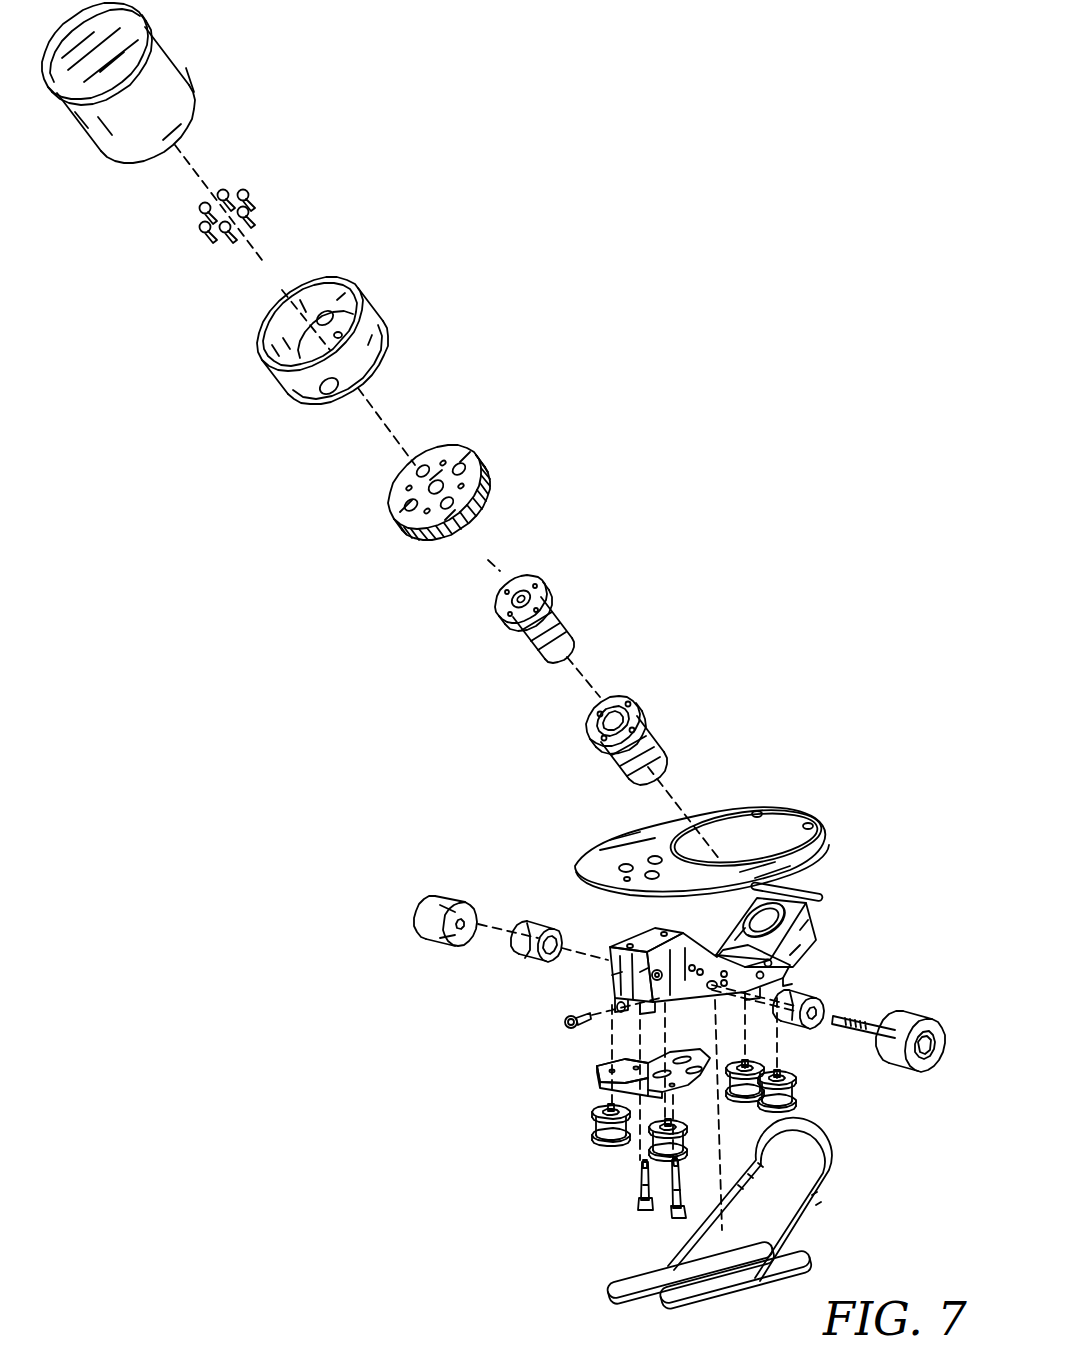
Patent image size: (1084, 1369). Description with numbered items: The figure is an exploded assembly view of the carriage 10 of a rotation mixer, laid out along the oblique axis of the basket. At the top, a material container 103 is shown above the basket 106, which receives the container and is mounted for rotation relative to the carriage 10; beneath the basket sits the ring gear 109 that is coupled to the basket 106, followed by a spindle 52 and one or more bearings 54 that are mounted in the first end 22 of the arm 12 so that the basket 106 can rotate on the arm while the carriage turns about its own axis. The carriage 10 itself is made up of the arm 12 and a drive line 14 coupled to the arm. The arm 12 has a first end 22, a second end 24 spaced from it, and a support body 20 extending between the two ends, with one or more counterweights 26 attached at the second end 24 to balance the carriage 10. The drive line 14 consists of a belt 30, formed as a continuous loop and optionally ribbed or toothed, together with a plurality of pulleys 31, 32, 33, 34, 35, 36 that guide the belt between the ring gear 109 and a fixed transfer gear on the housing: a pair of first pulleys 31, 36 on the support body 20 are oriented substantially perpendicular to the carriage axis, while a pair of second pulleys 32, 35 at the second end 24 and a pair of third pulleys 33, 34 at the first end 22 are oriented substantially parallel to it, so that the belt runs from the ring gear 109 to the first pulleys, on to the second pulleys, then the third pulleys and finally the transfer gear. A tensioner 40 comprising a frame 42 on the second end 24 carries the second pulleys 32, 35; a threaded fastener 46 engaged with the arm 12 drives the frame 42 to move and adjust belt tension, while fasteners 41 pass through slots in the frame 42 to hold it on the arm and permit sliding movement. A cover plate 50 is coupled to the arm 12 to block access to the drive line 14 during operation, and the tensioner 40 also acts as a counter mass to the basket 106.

The carriage 10 is at (672, 157).
The arm 12 is at (880, 858).
The drive line 14 is at (580, 1092).
The support body 20 is at (637, 954).
The first end 22 is at (832, 945).
The second end 24 is at (605, 965).
The counterweights 26 is at (420, 918).
The belt 30 is at (838, 1195).
The first pulley 31 is at (820, 982).
The second pulley 32 is at (640, 1143).
The third pulley 33 is at (800, 1090).
The third pulley 34 is at (757, 1072).
The second pulley 35 is at (592, 1125).
The first pulley 36 is at (545, 922).
The tensioner 40 is at (572, 1070).
The fasteners 41 is at (648, 1215).
The frame 42 is at (592, 1065).
The threaded fastener 46 is at (562, 1010).
The cover plate 50 is at (608, 840).
The spindle 52 is at (558, 606).
The bearings 54 is at (655, 718).
The material container 103 is at (183, 58).
The basket 106 is at (383, 308).
The ring gear 109 is at (497, 468).